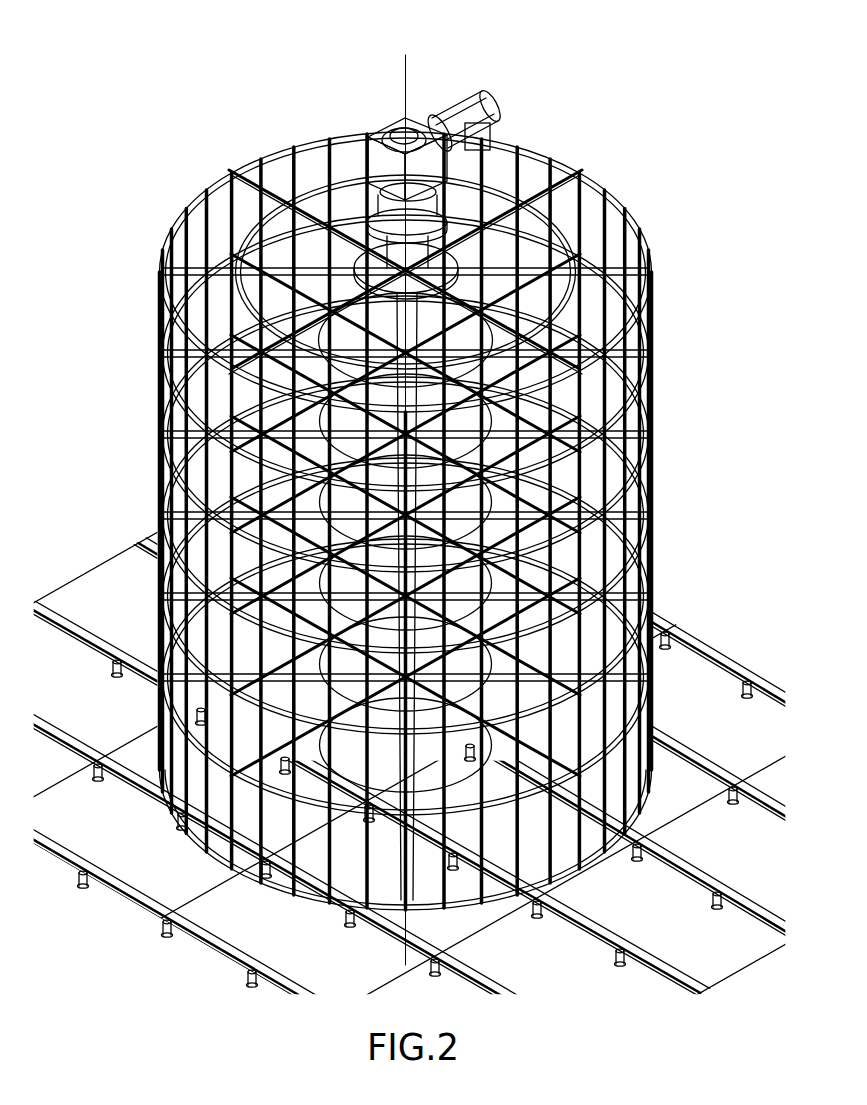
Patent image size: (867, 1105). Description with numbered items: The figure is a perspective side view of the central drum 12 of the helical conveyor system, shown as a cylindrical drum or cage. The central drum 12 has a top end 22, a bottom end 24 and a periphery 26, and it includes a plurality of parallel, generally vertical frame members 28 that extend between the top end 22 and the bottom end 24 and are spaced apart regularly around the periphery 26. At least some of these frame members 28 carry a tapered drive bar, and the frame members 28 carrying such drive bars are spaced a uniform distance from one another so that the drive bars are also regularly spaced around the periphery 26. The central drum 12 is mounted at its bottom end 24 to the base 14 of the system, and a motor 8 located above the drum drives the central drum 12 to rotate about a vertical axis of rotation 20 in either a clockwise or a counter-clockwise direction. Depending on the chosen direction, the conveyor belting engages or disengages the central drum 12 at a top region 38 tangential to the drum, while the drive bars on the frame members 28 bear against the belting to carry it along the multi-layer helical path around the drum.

The motor 8 is at (393, 118).
The central drum 12 is at (253, 162).
The base 14 is at (687, 750).
The vertical axis of rotation 20 is at (407, 72).
The top end 22 is at (627, 208).
The bottom end 24 is at (653, 773).
The periphery 26 is at (187, 207).
The frame members 28 is at (643, 320).
The top region 38 is at (595, 469).